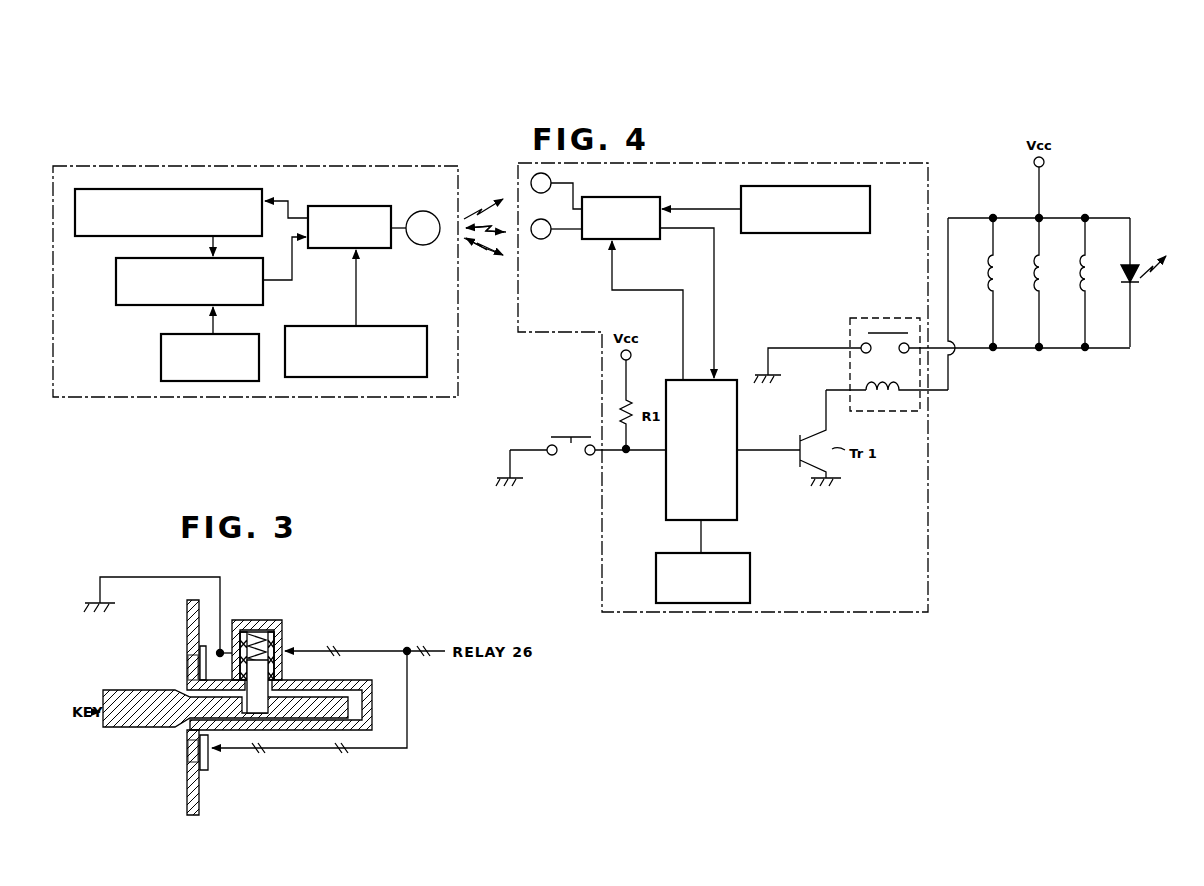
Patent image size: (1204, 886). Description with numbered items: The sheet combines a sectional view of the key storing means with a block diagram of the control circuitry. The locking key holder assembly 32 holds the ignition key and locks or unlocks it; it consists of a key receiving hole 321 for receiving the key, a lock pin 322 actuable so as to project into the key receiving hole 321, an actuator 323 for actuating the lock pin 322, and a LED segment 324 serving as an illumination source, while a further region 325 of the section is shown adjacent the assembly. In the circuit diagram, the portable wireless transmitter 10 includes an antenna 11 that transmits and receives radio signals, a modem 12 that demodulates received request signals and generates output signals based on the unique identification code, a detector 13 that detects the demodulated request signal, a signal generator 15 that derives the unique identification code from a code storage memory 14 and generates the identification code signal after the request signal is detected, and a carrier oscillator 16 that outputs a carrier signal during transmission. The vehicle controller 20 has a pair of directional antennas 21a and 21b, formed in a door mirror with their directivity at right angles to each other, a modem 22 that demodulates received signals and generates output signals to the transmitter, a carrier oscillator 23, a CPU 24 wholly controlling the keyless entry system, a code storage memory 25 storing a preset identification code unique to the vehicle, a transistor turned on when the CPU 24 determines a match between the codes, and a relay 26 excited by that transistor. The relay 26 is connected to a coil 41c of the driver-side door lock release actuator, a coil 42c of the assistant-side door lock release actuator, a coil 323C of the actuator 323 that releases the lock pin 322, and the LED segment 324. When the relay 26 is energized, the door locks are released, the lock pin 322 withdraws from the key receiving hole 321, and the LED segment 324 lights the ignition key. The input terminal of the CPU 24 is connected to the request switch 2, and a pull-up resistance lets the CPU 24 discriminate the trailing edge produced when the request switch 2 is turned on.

In FIG. 4, the portable wireless transmitter 10 is at (459, 188).
In FIG. 4, the antenna 11 is at (421, 245).
In FIG. 4, the modem 12 is at (377, 206).
In FIG. 4, the detector 13 is at (263, 199).
In FIG. 4, the code storage memory 14 is at (266, 322).
In FIG. 4, the signal generator 15 is at (265, 299).
In FIG. 4, the carrier oscillator 16 is at (388, 326).
In FIG. 4, the controller 20 is at (934, 185).
In FIG. 4, the directional antenna 21a is at (553, 180).
In FIG. 4, the directional antenna 21b is at (543, 240).
In FIG. 4, the modem 22 is at (645, 197).
In FIG. 4, the carrier oscillator 23 is at (860, 186).
In FIG. 4, the CPU 24 is at (740, 496).
In FIG. 4, the code storage memory 25 is at (753, 582).
In FIG. 4, the relay 26 is at (874, 318).
In FIG. 4, the request switch 2 is at (568, 432).
In FIG. 4, the coil 42c is at (998, 262).
In FIG. 4, the coil 41c is at (1045, 262).
In FIG. 4, the coil 323C is at (1073, 280).
In FIG. 4, the LED segment 324 is at (1117, 283).
In FIG. 3, the LED segment 324 is at (187, 665).
In FIG. 3, the locking key holder assembly 32 is at (293, 676).
In FIG. 3, the key receiving hole 321 is at (360, 716).
In FIG. 3, the lock pin 322 is at (270, 708).
In FIG. 3, the actuator 323 is at (284, 628).
In FIG. 3, the contact 325 is at (240, 700).